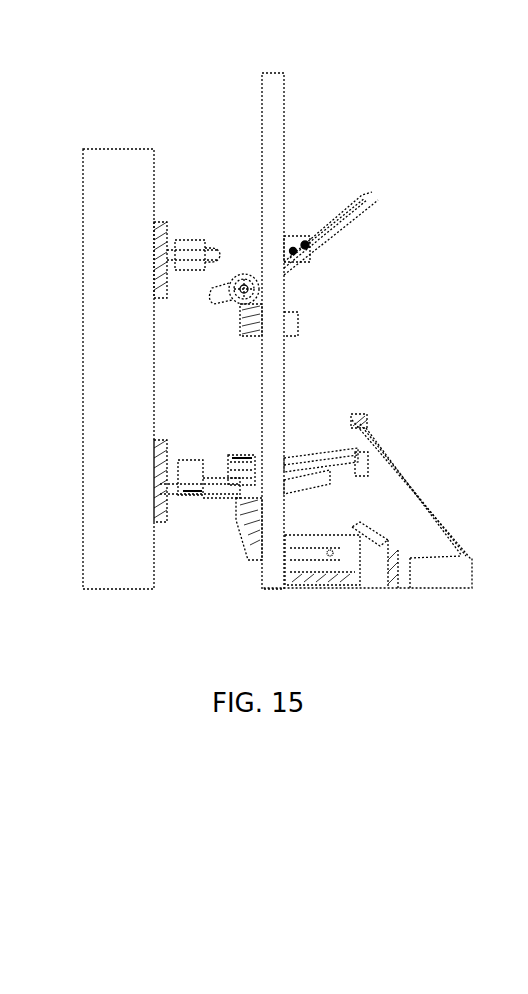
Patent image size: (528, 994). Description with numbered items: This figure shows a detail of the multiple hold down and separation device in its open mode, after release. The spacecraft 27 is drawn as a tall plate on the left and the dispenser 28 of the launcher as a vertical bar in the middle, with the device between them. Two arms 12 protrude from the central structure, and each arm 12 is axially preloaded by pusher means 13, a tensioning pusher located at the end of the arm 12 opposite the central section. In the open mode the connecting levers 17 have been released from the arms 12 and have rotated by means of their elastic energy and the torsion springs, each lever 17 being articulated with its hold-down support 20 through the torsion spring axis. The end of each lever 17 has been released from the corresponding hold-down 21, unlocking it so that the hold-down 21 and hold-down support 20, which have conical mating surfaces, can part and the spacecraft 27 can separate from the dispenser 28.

The arm 12 is at (413, 487).
The pusher means 13 is at (372, 420).
The connecting lever 17 is at (332, 238).
The hold-down support 20 is at (238, 270).
The hold-down 21 is at (178, 245).
The spacecraft 27 is at (103, 168).
The dispenser 28 is at (273, 83).